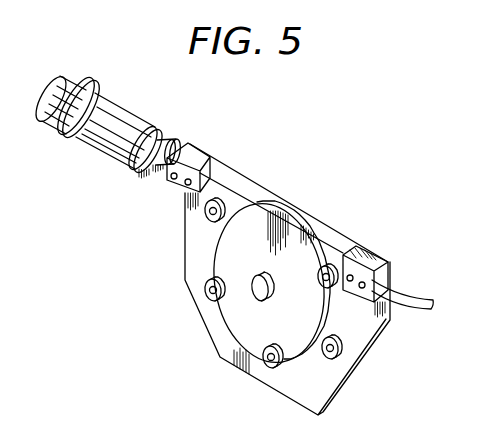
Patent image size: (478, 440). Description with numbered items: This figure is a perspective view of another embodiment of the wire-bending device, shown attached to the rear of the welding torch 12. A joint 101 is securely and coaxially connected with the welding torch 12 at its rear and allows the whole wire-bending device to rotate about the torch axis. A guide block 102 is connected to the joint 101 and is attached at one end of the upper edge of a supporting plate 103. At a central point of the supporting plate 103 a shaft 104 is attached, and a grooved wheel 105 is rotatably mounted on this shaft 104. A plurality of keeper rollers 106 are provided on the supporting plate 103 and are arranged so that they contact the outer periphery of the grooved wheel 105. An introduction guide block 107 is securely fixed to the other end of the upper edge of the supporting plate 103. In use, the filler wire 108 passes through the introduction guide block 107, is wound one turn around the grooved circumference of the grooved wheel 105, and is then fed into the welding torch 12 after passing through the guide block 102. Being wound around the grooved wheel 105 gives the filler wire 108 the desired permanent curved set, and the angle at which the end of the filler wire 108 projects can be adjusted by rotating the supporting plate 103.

The cylinder / actuator body 12 is at (110, 109).
The joint 101 is at (167, 146).
The guide block 102 is at (182, 185).
The supporting plate 103 is at (358, 346).
The shaft 104 is at (257, 292).
The grooved wheel 105 is at (258, 332).
The keeper rollers 106 is at (328, 352).
The introduction guide block 107 is at (363, 268).
The filler wire 108 is at (228, 194).